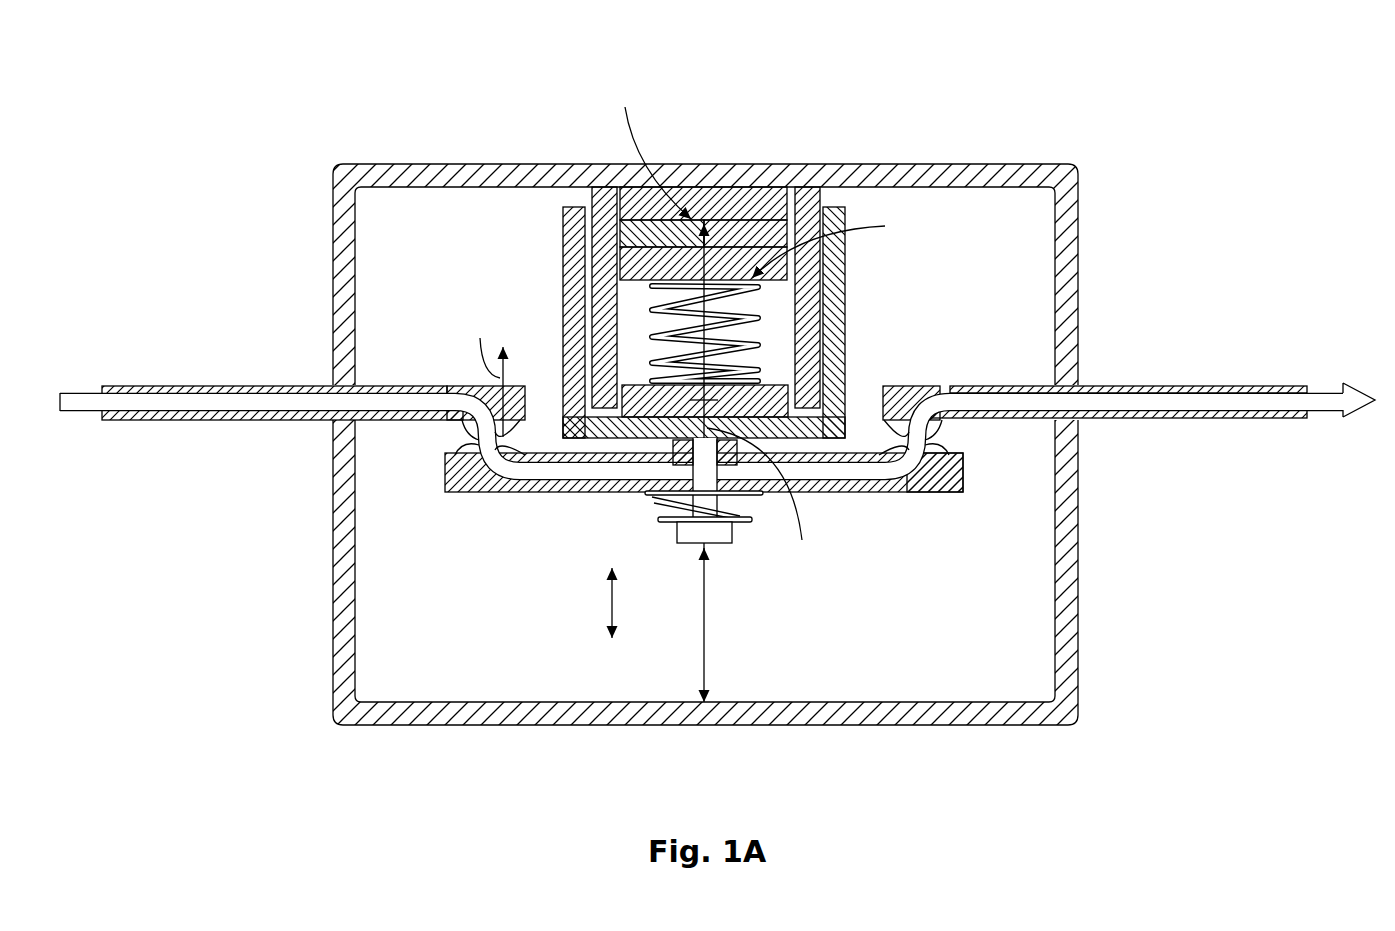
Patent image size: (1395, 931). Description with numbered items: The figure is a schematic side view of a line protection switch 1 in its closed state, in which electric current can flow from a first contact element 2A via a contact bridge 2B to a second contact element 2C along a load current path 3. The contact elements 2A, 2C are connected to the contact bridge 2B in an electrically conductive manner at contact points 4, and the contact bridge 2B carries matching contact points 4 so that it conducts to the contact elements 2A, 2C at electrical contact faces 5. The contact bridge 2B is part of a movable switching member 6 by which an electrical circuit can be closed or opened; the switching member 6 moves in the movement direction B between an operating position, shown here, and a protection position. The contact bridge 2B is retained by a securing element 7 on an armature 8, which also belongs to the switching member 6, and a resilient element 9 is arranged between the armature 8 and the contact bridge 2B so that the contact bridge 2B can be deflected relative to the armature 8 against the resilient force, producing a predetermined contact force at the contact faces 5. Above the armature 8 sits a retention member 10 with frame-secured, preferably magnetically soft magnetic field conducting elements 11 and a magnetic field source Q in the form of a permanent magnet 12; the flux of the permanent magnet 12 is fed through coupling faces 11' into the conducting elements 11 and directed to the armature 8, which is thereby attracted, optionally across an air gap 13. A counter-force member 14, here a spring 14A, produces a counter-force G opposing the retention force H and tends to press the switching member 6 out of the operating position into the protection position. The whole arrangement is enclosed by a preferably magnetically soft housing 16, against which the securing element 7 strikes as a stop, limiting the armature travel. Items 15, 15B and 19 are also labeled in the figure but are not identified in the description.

The line protection switch 1 is at (342, 62).
The first contact element 2A is at (186, 424).
The contact bridge 2B is at (458, 477).
The second contact element 2C is at (1270, 385).
The load current path 3 is at (1172, 399).
The contact points 4 is at (456, 443).
The electrical contact faces 5 is at (930, 452).
The movable switching member 6 is at (527, 590).
The securing element 7 is at (737, 535).
The armature 8 is at (640, 403).
The resilient element 9 is at (653, 499).
The retention member 10 is at (715, 177).
The magnetic field conducting elements 11 is at (656, 186).
The coupling faces 11' is at (703, 175).
The permanent magnet 12 is at (750, 242).
The air gap 13 is at (806, 404).
The counter-force member 14 is at (797, 310).
The spring 14A is at (760, 313).
The contact region 15 is at (847, 552).
The clamping block 15B is at (466, 376).
The housing 16 is at (1064, 652).
The cup 19 is at (836, 336).